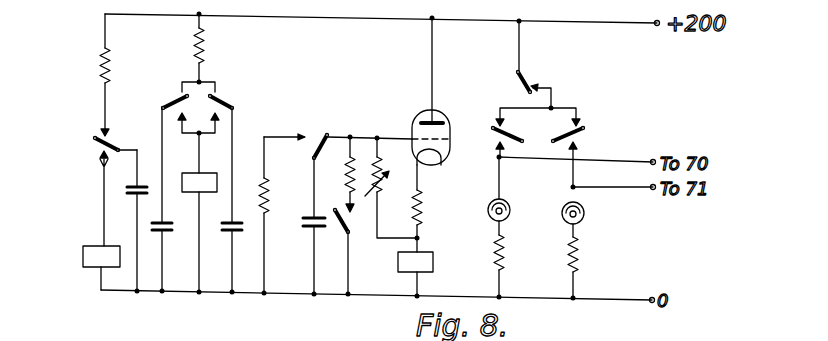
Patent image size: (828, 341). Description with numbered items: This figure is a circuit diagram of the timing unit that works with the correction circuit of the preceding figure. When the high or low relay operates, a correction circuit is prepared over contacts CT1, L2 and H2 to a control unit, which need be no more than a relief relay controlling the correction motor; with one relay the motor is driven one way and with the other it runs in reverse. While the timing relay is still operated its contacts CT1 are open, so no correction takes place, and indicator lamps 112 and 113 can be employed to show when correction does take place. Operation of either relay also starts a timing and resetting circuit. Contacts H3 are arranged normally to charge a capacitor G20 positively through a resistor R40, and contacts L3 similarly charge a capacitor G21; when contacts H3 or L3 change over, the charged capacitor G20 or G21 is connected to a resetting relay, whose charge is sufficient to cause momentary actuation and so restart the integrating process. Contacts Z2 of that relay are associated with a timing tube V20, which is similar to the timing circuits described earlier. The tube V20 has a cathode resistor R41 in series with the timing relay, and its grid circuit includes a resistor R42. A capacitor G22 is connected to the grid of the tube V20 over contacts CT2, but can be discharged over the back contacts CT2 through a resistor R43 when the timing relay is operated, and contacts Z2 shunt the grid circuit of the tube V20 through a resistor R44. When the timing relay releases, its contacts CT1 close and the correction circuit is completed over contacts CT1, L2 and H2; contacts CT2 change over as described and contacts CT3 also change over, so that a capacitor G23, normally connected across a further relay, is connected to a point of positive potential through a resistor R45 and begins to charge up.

The resistor R45 is at (108, 78).
The resistor R40 is at (203, 40).
The contacts H3 is at (172, 94).
The contacts L3 is at (219, 98).
The contacts CT3 is at (100, 150).
The capacitor G23 is at (128, 196).
The capacitor G20 is at (175, 230).
The capacitor G21 is at (245, 230).
The resistor R43 is at (292, 176).
The contacts CT2 is at (313, 130).
The capacitor G22 is at (305, 227).
The contacts Z2 is at (338, 228).
The resistor R44 is at (358, 165).
The resistor R42 is at (384, 160).
The timing tube V20 is at (445, 120).
The cathode resistor R41 is at (422, 216).
The contacts CT1 is at (528, 78).
The contacts H2 is at (495, 137).
The contacts L2 is at (582, 139).
The indicator lamp 112 is at (493, 200).
The indicator lamp 113 is at (582, 216).